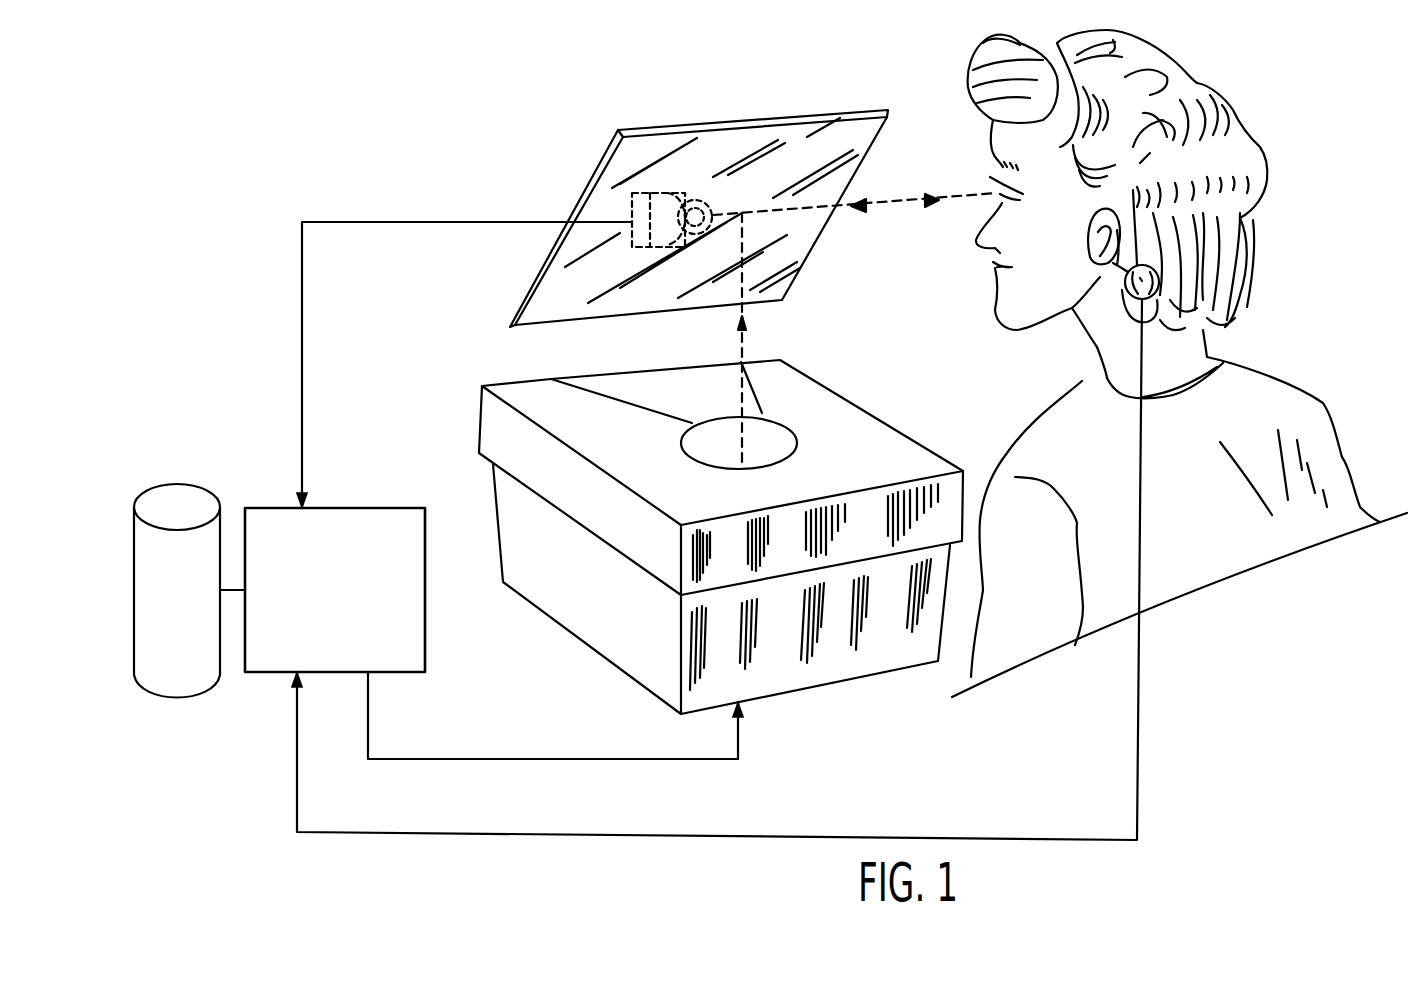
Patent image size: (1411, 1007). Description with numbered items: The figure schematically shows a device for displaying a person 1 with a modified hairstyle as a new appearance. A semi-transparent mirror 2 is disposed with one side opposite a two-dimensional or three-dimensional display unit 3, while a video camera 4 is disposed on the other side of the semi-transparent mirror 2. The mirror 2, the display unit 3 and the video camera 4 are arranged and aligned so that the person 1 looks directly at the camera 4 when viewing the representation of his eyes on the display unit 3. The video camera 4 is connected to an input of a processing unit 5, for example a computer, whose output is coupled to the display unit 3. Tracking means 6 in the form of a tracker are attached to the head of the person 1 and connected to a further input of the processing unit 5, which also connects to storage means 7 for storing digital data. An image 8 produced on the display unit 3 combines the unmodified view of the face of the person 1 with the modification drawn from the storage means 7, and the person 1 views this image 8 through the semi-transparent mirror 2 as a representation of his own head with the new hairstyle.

The person 1 is at (1278, 418).
The semi-transparent mirror 2 is at (805, 136).
The display unit 3 is at (540, 397).
The video camera 4 is at (633, 205).
The processing unit 5 is at (347, 520).
The tracking means 6 is at (1123, 294).
The storage means 7 is at (190, 502).
The image 8 is at (764, 439).